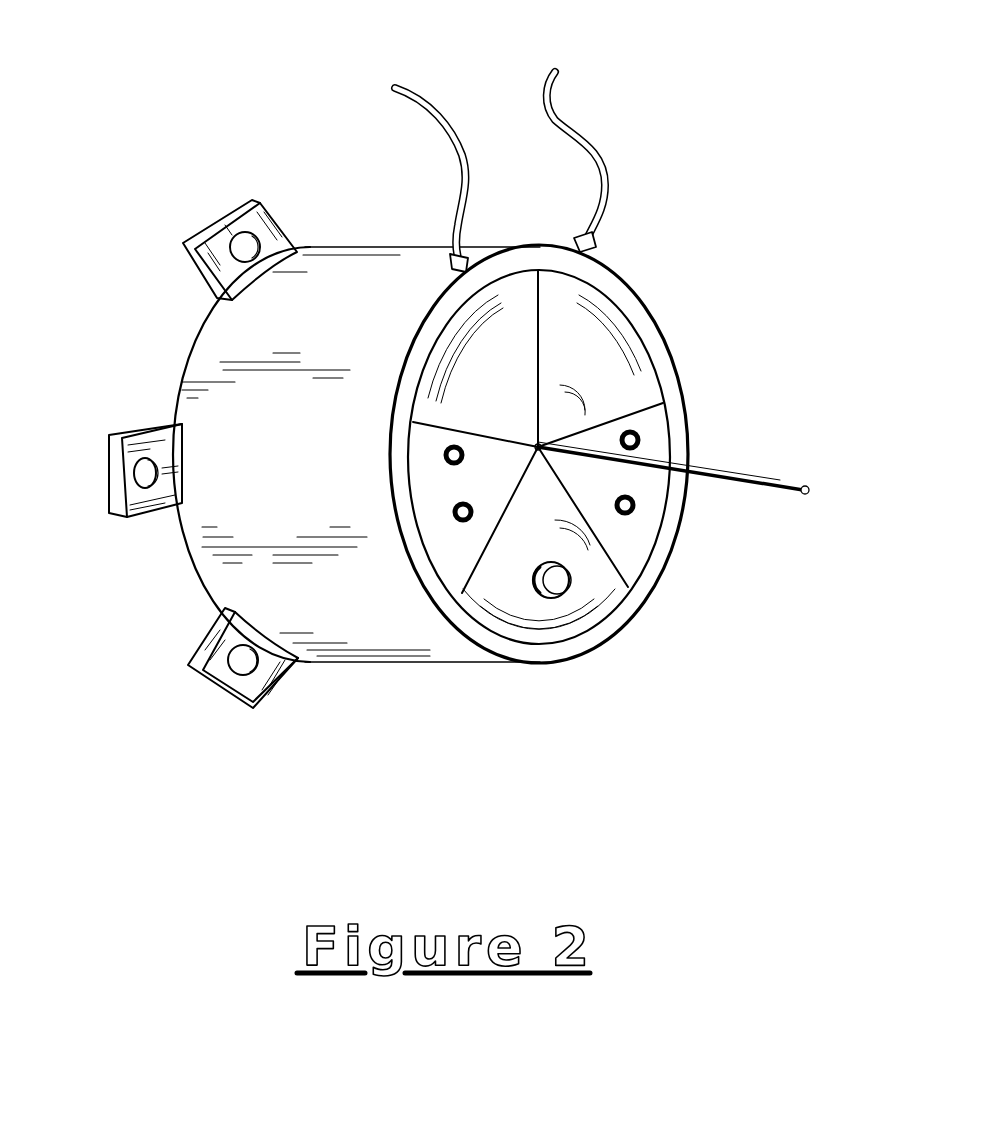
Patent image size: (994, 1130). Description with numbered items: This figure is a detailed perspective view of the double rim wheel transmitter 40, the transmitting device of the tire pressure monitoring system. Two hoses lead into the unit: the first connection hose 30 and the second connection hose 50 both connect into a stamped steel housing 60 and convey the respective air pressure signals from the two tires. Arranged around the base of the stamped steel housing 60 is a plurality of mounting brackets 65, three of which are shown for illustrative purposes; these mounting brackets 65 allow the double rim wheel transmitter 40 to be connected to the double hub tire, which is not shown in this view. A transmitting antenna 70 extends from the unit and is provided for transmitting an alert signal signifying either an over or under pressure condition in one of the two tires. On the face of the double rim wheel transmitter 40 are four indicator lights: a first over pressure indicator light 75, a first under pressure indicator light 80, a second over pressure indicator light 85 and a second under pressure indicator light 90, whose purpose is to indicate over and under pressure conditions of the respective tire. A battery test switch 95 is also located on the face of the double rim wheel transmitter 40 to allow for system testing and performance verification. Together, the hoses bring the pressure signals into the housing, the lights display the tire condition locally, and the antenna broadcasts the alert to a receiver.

The first connection hose 30 is at (590, 142).
The double rim wheel transmitter 40 is at (705, 612).
The second connection hose 50 is at (433, 113).
The stamped steel housing 60 is at (693, 425).
The mounting brackets 65 is at (226, 212).
The transmitting antenna 70 is at (755, 477).
The first over pressure indicator light 75 is at (636, 432).
The first under pressure indicator light 80 is at (637, 510).
The second over pressure indicator light 85 is at (445, 452).
The second under pressure indicator light 90 is at (463, 523).
The battery test switch 95 is at (562, 597).